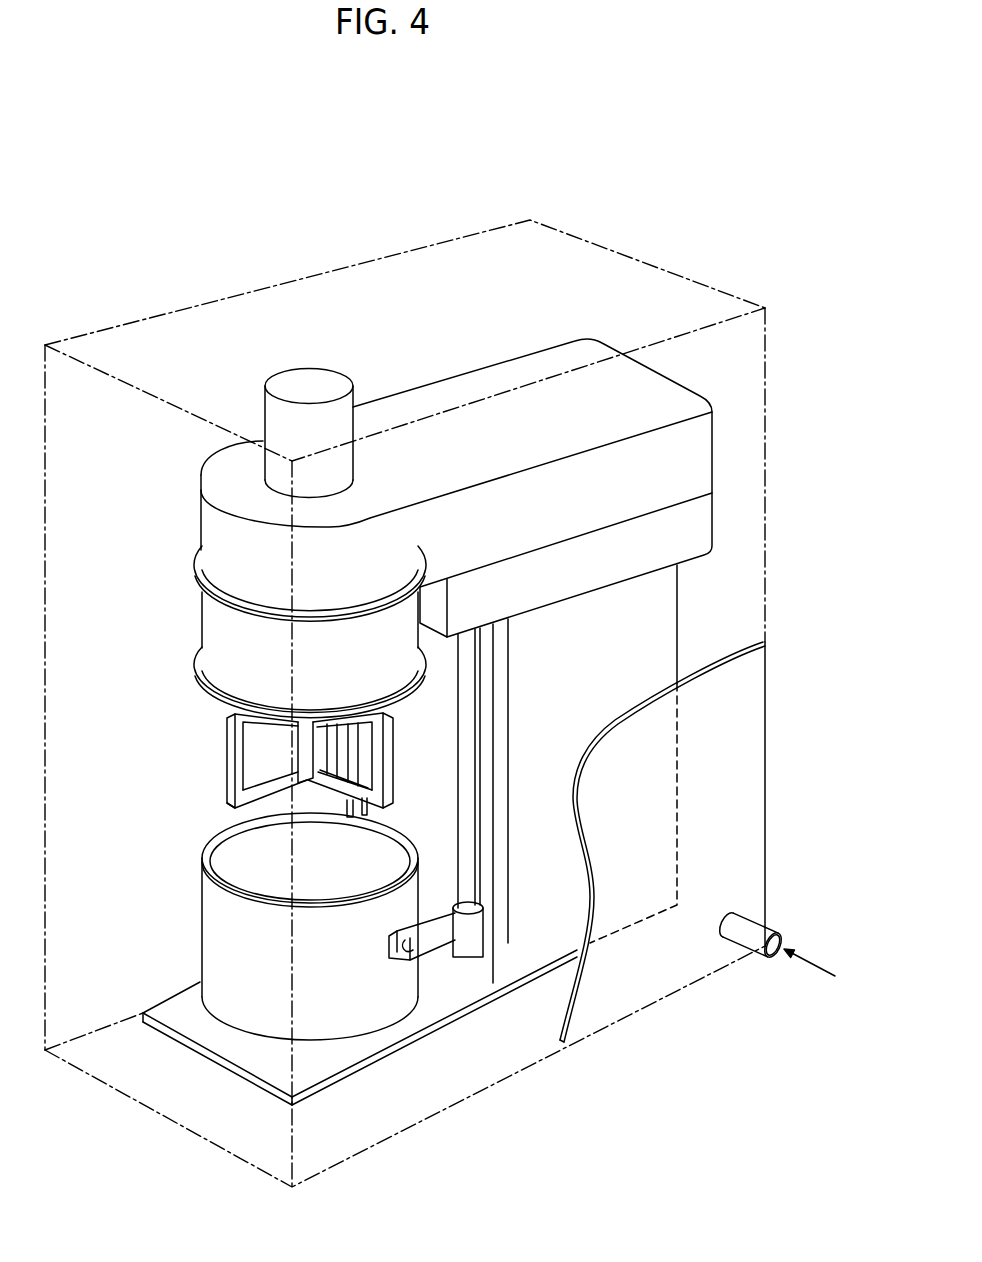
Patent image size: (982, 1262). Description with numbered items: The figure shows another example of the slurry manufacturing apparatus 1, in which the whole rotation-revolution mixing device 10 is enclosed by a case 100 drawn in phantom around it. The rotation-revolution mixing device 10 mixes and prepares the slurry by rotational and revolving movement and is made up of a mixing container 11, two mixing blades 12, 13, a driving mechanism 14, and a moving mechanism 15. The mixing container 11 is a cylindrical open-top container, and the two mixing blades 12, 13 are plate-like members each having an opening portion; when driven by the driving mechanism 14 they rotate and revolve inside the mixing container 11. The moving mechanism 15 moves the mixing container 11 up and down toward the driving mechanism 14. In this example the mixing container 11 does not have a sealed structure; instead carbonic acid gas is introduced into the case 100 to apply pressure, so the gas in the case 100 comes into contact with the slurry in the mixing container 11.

The slurry manufacturing apparatus 1 is at (387, 722).
The rotation-revolution mixing device 10 is at (387, 722).
The mixing container 11 is at (205, 926).
The mixing blade 12 is at (228, 757).
The mixing blade 13 is at (393, 747).
The driving mechanism 14 is at (194, 621).
The moving mechanism 15 is at (470, 952).
The case 100 is at (760, 797).